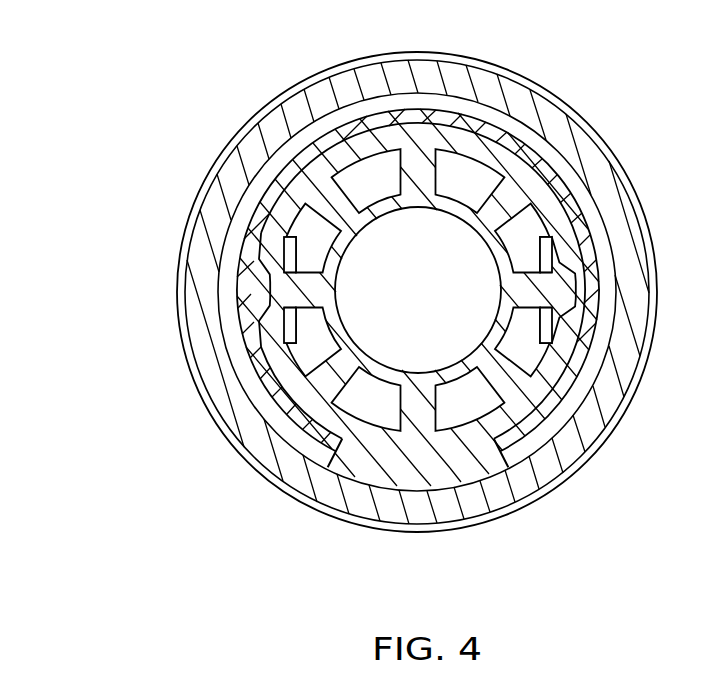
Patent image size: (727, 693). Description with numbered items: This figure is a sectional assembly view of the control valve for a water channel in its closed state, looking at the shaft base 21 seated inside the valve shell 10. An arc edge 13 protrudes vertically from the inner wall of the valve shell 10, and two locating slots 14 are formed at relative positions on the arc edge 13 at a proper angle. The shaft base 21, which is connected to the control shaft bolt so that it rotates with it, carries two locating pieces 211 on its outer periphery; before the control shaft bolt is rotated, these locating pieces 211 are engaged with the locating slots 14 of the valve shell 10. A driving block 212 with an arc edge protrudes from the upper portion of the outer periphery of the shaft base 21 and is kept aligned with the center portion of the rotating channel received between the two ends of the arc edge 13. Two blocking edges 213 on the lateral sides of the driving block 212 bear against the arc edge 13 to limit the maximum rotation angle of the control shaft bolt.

The valve shell 10 is at (238, 120).
The shaft base 21 is at (403, 135).
The arc edge 13 is at (535, 168).
The locating slots 14 is at (243, 290).
The locating pieces 211 is at (418, 290).
The driving block 212 is at (412, 462).
The blocking edges 213 is at (322, 452).